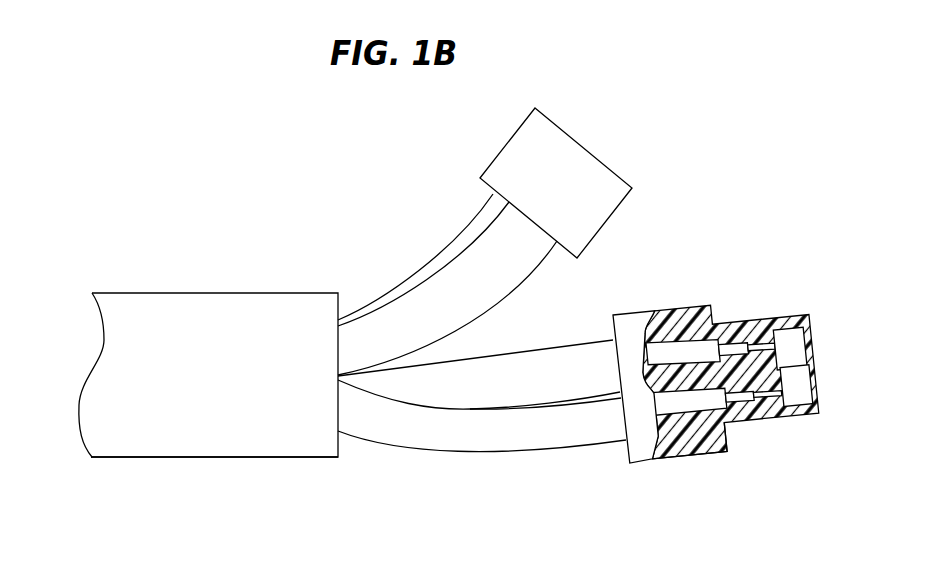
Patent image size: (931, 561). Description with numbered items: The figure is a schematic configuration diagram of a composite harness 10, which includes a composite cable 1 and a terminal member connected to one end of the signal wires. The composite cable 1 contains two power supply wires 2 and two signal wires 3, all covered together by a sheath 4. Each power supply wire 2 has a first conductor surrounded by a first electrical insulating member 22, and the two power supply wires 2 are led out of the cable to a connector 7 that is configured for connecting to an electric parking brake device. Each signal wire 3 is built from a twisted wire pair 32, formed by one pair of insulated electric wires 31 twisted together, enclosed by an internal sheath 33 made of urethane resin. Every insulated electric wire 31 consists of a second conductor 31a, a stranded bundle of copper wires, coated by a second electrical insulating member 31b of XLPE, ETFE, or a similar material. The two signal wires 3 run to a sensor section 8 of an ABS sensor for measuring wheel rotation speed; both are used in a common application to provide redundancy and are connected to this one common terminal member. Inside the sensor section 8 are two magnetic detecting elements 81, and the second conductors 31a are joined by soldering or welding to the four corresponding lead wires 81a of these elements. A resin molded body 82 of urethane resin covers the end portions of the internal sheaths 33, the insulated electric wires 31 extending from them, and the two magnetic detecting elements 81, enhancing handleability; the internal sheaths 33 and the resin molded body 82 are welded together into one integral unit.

The composite harness 10 is at (159, 174).
The composite cable 1 is at (98, 274).
The sheath 4 is at (144, 445).
The power supply wire 2 is at (440, 310).
The first electrical insulating member 22 is at (390, 328).
The connector 7 is at (523, 143).
The signal wire 3 is at (455, 395).
The internal sheath 33 is at (520, 438).
The sensor section 8 is at (712, 283).
The resin molded body 82 is at (637, 320).
The magnetic detecting element 81 is at (797, 393).
The lead wire 81a is at (760, 340).
The insulated electric wire 31 is at (685, 420).
The second conductor 31a is at (730, 412).
The second electrical insulating member 31b is at (707, 417).
The twisted wire pair 32 is at (675, 432).